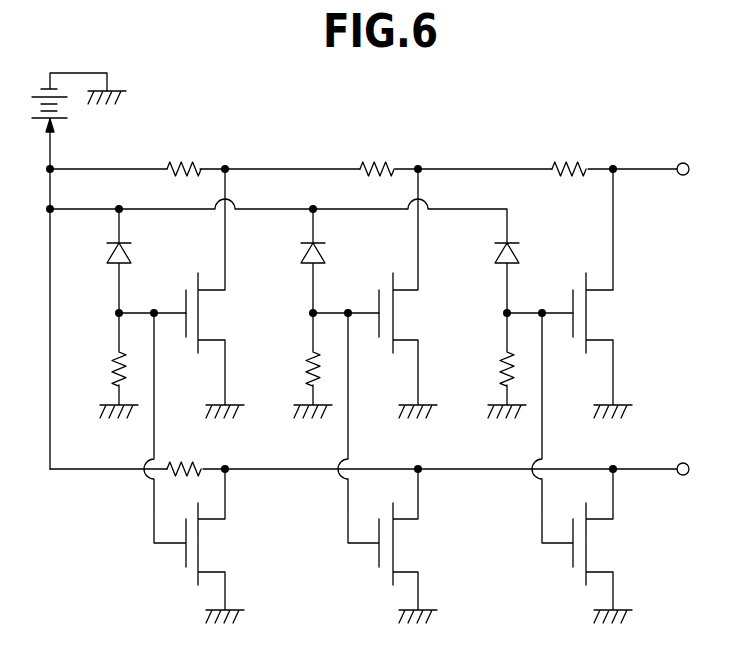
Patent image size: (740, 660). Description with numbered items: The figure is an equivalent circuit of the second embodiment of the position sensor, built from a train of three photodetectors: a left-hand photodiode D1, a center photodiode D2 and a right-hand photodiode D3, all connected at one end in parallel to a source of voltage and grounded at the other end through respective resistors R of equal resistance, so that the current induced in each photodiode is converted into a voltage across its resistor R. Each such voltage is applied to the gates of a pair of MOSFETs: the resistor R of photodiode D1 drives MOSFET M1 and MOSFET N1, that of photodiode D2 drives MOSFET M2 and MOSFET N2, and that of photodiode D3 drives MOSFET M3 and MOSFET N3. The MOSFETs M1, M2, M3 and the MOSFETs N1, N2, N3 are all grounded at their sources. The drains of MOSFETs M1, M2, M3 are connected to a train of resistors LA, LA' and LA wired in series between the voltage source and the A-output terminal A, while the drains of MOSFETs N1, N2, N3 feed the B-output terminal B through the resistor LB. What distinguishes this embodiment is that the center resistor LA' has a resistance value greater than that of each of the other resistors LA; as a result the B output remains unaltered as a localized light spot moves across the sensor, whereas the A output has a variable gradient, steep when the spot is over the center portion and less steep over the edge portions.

The resistor LA is at (399, 149).
The resistor LA' is at (401, 149).
The resistor LB is at (203, 463).
The left-hand photodiode D1 is at (137, 252).
The center photodiode D2 is at (331, 252).
The right-hand photodiode D3 is at (525, 252).
The MOSFET M1 is at (228, 317).
The MOSFET M2 is at (423, 318).
The MOSFET M3 is at (617, 318).
The MOSFET N1 is at (230, 547).
The MOSFET N2 is at (424, 547).
The MOSFET N3 is at (617, 547).
The resistor R is at (488, 366).
The A-output terminal A is at (696, 167).
The B-output terminal B is at (696, 467).